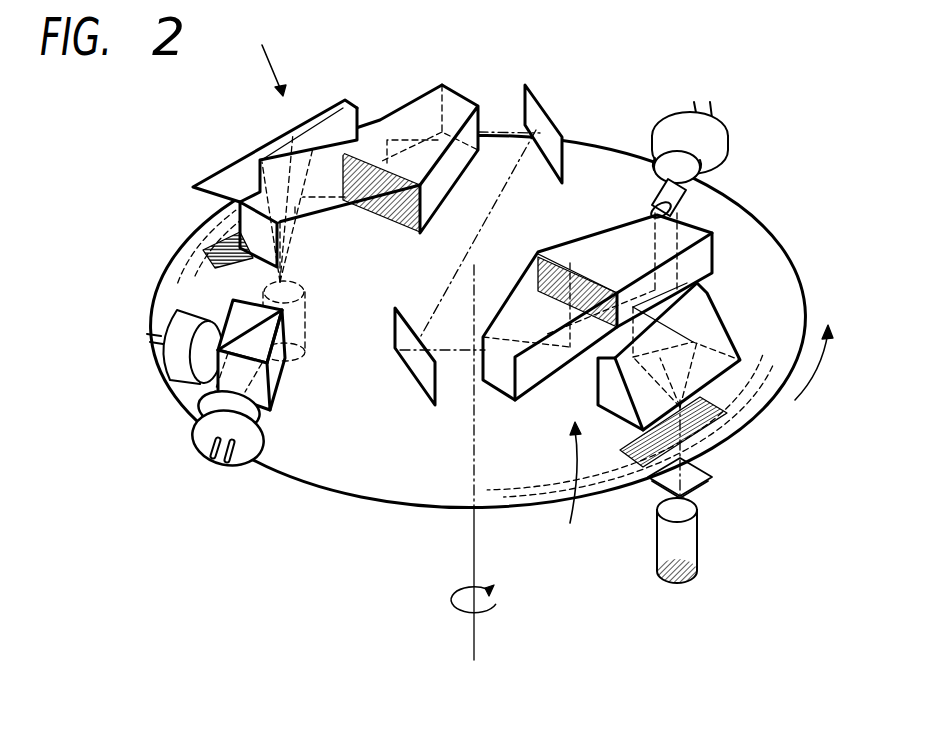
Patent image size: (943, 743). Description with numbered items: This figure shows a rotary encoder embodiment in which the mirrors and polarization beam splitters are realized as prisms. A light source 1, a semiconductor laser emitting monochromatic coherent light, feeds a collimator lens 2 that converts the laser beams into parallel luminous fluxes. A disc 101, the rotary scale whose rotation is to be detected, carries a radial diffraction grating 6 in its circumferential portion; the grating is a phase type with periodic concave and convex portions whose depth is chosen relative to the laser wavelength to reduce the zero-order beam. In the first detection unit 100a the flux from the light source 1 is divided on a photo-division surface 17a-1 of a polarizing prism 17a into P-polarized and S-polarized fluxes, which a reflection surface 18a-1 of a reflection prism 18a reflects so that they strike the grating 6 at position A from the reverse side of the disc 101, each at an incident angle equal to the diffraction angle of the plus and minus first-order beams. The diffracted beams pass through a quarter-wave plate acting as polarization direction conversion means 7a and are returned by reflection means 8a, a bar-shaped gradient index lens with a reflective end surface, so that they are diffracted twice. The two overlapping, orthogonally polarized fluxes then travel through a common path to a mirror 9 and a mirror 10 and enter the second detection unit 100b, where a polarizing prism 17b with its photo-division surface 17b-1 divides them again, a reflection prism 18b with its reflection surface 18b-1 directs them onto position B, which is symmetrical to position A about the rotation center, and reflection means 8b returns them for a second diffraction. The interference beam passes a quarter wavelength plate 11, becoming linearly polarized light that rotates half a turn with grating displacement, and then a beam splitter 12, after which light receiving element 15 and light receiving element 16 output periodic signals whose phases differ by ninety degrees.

The light source 1 is at (733, 140).
The collimator lens 2 is at (683, 205).
The radial diffraction grating 6 is at (752, 412).
The polarization direction conversion means 7a is at (712, 477).
The reflection means 8a is at (697, 540).
The reflection means 8b is at (307, 340).
The mirror 9 is at (418, 377).
The mirror 10 is at (540, 96).
The quarter wavelength plate 11 is at (245, 288).
The beam splitter 12 is at (277, 393).
The light receiving element 15 is at (202, 445).
The light receiving element 16 is at (160, 352).
The polarizing prism 17a is at (708, 252).
The photo-division surface 17a-1 is at (558, 247).
The polarizing prism 17b is at (445, 182).
The photo-division surface 17b-1 is at (405, 233).
The reflection prism 18a is at (713, 295).
The reflection surface 18a-1 is at (717, 333).
The reflection prism 18b is at (347, 98).
The reflection surface 18b-1 is at (217, 173).
The detection unit 100a is at (574, 491).
The detection unit 100b is at (258, 54).
The disc 101 is at (410, 492).
The position A is at (728, 435).
The position B is at (212, 197).